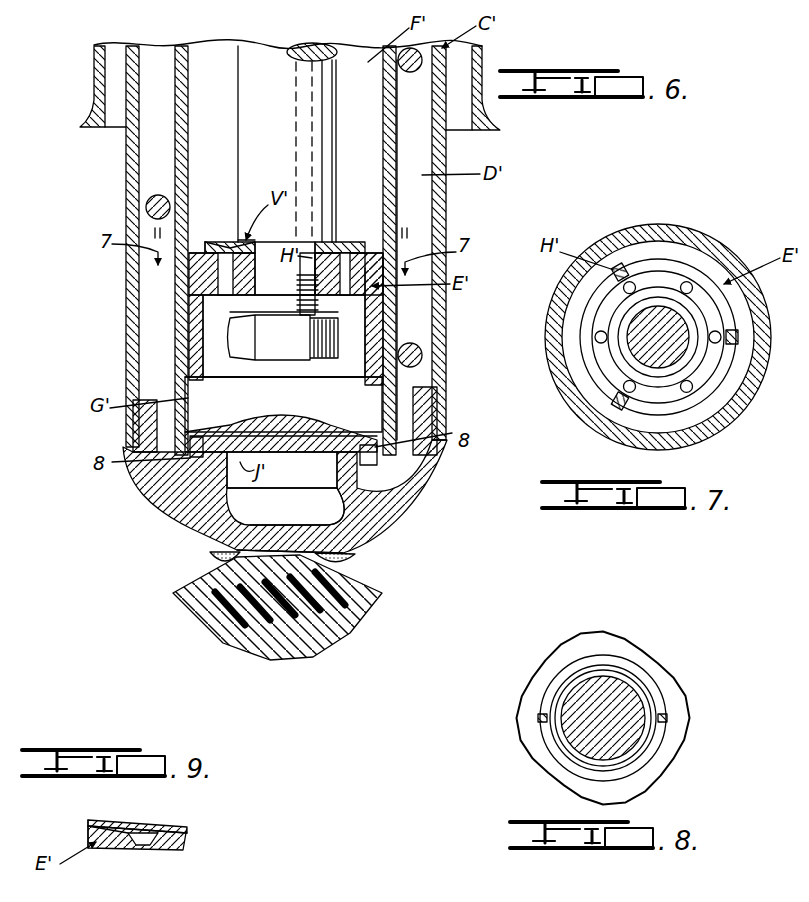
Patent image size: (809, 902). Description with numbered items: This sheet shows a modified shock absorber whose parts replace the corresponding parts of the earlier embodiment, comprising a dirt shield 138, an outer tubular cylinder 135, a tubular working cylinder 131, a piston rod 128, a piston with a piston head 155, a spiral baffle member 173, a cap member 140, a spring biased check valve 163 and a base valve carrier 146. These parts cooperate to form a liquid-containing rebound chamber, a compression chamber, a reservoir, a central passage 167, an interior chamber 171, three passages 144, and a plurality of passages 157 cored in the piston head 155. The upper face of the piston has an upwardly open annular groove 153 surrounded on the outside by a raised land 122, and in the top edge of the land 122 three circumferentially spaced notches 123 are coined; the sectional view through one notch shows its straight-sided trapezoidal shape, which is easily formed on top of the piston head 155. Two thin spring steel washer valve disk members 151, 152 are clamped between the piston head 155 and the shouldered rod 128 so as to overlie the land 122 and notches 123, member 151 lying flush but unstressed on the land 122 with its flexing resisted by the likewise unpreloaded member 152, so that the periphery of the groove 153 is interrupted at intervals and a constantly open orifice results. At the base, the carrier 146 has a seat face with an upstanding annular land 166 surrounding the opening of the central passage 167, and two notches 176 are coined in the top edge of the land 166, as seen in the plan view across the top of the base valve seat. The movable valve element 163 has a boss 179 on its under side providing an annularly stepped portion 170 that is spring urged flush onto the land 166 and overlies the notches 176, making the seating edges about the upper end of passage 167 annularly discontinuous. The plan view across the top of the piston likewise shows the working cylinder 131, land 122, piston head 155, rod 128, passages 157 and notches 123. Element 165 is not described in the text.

In FIG. 6, the piston rod 128 is at (260, 50).
In FIG. 7, the piston rod 128 is at (658, 337).
In FIG. 6, the tubular working cylinder 131 is at (383, 146).
In FIG. 7, the tubular working cylinder 131 is at (652, 228).
In FIG. 6, the dirt shield 138 is at (500, 130).
In FIG. 6, the outer tubular cylinder 135 is at (444, 208).
In FIG. 6, the valve disk member 152 is at (218, 240).
In FIG. 6, the annular groove 153 is at (248, 245).
In FIG. 6, the notches 123 is at (356, 248).
In FIG. 7, the notches 123 is at (740, 340).
In FIG. 9, the notches 123 is at (143, 828).
In FIG. 6, the valve disk member 151 is at (206, 256).
In FIG. 9, the valve disk member 151 is at (92, 820).
In FIG. 6, the raised land 122 is at (197, 256).
In FIG. 7, the raised land 122 is at (690, 262).
In FIG. 6, the passages 157 is at (300, 282).
In FIG. 7, the passages 157 is at (620, 345).
In FIG. 6, the piston head 155 is at (372, 305).
In FIG. 7, the piston head 155 is at (595, 308).
In FIG. 9, the piston head 155 is at (170, 850).
In FIG. 6, the spiral baffle member 173 is at (418, 348).
In FIG. 6, the cap member 140 is at (150, 432).
In FIG. 6, the end block 165 is at (210, 435).
In FIG. 6, the notches 176 is at (240, 433).
In FIG. 8, the notches 176 is at (660, 690).
In FIG. 6, the spring biased check valve 163 is at (293, 420).
In FIG. 6, the boss 179 is at (332, 460).
In FIG. 8, the boss 179 is at (628, 752).
In FIG. 6, the base valve carrier 146 is at (165, 498).
In FIG. 8, the base valve carrier 146 is at (522, 700).
In FIG. 6, the central passage 167 is at (320, 490).
In FIG. 8, the central passage 167 is at (560, 742).
In FIG. 6, the annularly stepped portion 170 is at (337, 492).
In FIG. 6, the passages 144 is at (365, 498).
In FIG. 6, the interior chamber 171 is at (215, 552).
In FIG. 8, the interior chamber 171 is at (648, 740).
In FIG. 8, the annular land 166 is at (660, 678).